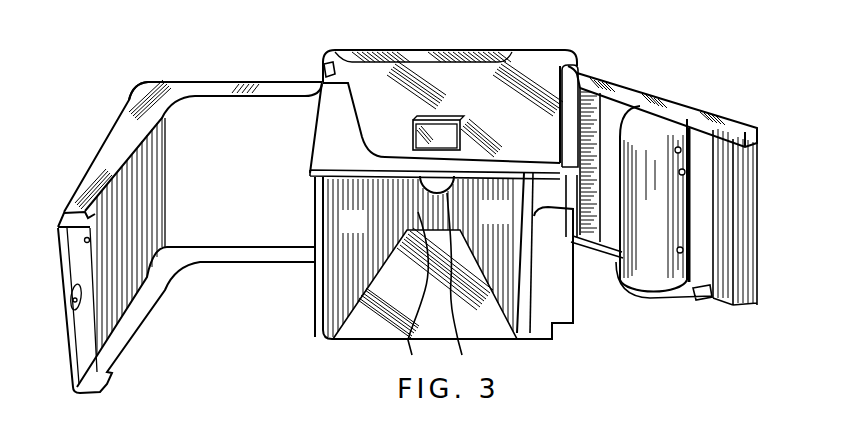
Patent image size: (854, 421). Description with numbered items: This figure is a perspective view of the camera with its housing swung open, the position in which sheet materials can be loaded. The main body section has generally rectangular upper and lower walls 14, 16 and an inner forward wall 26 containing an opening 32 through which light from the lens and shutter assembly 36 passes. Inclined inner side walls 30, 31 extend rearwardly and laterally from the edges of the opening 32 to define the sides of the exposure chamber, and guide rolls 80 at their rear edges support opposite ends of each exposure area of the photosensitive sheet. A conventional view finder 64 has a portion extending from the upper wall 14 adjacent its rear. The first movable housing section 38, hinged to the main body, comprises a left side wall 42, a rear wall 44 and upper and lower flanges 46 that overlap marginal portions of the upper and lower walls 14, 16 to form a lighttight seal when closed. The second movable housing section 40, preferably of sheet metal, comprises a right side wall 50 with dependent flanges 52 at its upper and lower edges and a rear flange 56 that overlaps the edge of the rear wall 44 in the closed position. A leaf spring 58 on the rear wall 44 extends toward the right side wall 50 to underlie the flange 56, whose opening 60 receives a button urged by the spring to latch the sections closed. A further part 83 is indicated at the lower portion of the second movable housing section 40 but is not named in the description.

The upper wall 14 is at (499, 122).
The lower wall 16 is at (370, 327).
The inner forward wall 26 is at (417, 292).
The inclined inner side wall 30 is at (485, 222).
The inclined inner side wall 31 is at (343, 231).
The opening 32 is at (460, 282).
The shutter assembly 36 is at (423, 50).
The first movable housing section 38 is at (129, 96).
The second movable housing section 40 is at (711, 110).
The left side wall 42 is at (247, 181).
The rear wall 44 is at (85, 242).
The upper and lower flanges 46 is at (120, 140).
The right side wall 50 is at (604, 103).
The dependent flanges 52 is at (630, 93).
The rear flange 56 is at (752, 156).
The leaf spring 58 is at (74, 311).
The opening 60 is at (748, 218).
The view finder 64 is at (413, 124).
The guide rolls 80 is at (318, 328).
The roller 83 is at (666, 305).